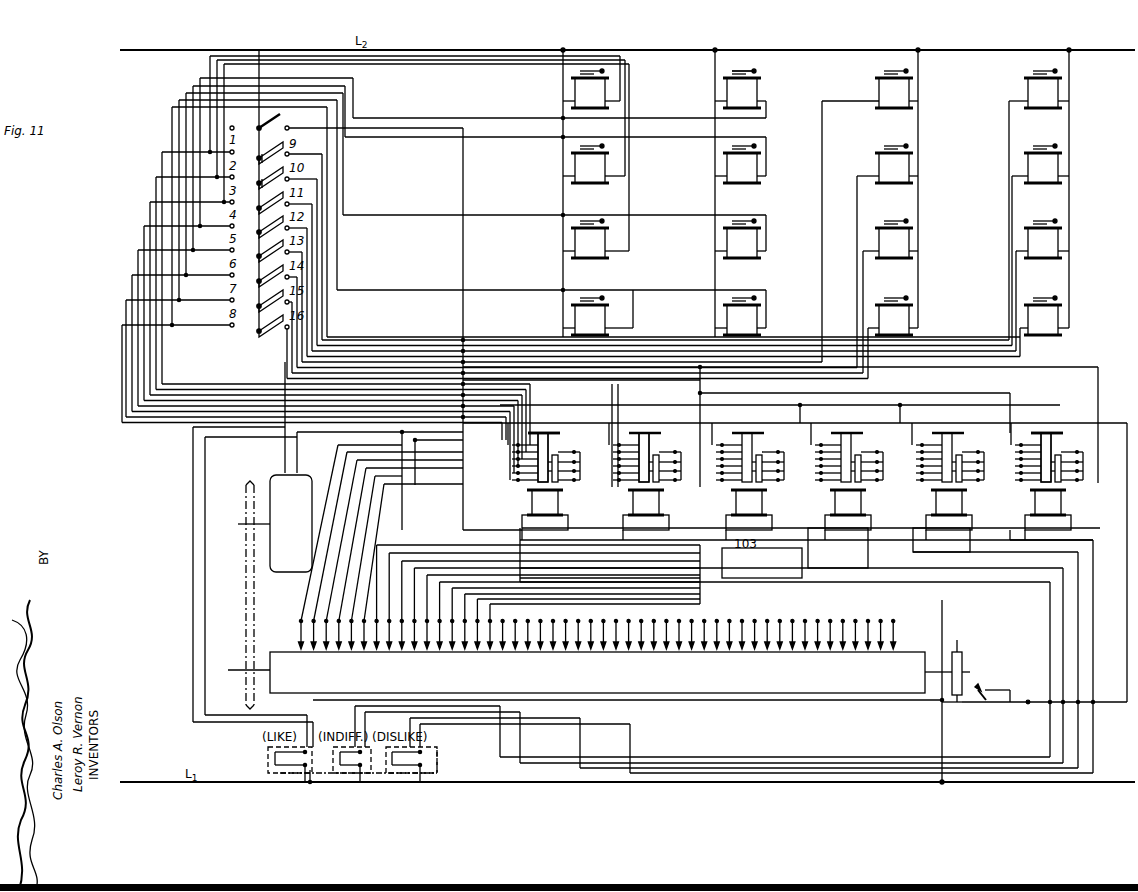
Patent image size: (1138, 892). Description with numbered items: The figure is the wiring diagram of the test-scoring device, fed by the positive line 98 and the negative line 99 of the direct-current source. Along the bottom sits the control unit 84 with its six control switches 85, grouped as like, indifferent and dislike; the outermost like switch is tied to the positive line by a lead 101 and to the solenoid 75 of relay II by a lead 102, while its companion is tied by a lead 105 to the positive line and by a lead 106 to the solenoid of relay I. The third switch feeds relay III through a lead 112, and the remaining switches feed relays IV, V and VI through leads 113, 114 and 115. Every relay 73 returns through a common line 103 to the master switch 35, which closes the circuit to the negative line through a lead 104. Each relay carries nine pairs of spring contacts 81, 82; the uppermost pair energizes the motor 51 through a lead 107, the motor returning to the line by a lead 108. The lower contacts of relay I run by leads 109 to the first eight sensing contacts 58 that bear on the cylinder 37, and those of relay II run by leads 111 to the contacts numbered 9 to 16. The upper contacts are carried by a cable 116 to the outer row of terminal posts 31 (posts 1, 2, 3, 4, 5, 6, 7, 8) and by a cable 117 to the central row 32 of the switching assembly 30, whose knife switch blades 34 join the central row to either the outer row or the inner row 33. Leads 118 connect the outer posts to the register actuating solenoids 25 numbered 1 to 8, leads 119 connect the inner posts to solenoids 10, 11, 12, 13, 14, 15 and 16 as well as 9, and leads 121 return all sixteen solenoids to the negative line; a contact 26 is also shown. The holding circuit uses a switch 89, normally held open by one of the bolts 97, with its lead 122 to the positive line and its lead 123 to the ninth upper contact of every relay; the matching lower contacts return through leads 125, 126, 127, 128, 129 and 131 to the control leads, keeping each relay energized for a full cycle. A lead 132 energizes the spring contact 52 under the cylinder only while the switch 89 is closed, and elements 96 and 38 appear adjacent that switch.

The negative line 99 is at (427, 55).
The positive line 98 is at (138, 784).
The lead 104 is at (262, 76).
The master switch 35 is at (288, 125).
The outer row of terminal posts 31 is at (217, 202).
The switching assembly 30 is at (220, 233).
The central row of terminal posts 32 is at (280, 194).
The inner row of terminal posts 33 is at (288, 225).
The knife switch blades 34 is at (288, 246).
The leads 118 is at (492, 118).
The register actuating solenoids 25 is at (600, 108).
The relay contact 26 is at (754, 71).
The line 103 is at (465, 185).
The leads 121 is at (1074, 125).
The leads 119 is at (393, 353).
The leads 117 is at (702, 380).
The leads 116 is at (484, 410).
The lower spring contacts 82 is at (518, 427).
The upper spring contacts 81 is at (546, 432).
The lead 126 is at (582, 417).
The lead 108 is at (283, 448).
The lead 107 is at (299, 448).
The motor 51 is at (268, 478).
The lead 125 is at (449, 436).
The relays 73 is at (516, 497).
The relay solenoid 75 is at (655, 525).
The lead 102 is at (192, 555).
The lead 106 is at (200, 590).
The leads 109 is at (312, 586).
The sensing contacts 58 is at (299, 636).
The leads 111 is at (700, 578).
The lead 127 is at (718, 566).
The lead 128 is at (813, 543).
The lead 129 is at (915, 543).
The lead 131 is at (1010, 541).
The lead 112 is at (503, 706).
The lead 113 is at (505, 716).
The lead 114 is at (578, 758).
The lead 115 is at (628, 760).
The cylinder 37 is at (636, 693).
The spring contact 52 is at (754, 700).
The lead 132 is at (858, 702).
The lead 122 is at (940, 728).
The bolts 97 is at (958, 640).
The resistor 96 is at (964, 644).
The conductor 38 is at (969, 667).
The switch 89 is at (980, 702).
The lead 123 is at (1126, 658).
The control switches 85 is at (259, 752).
The lead 101 is at (300, 781).
The lead 105 is at (310, 778).
The unit 84 is at (350, 778).
The terminal post / solenoid / sensing contact 1 is at (590, 88).
The terminal post / solenoid / sensing contact 2 is at (590, 163).
The terminal post / solenoid / sensing contact 3 is at (590, 238).
The terminal post / solenoid / sensing contact 4 is at (590, 315).
The terminal post / solenoid / sensing contact 5 is at (742, 88).
The terminal post / solenoid / sensing contact 6 is at (742, 163).
The terminal post / solenoid / sensing contact 7 is at (742, 238).
The terminal post / solenoid / sensing contact 8 is at (742, 315).
The terminal post / solenoid / sensing contact 9 is at (894, 88).
The terminal post / solenoid / sensing contact 10 is at (894, 163).
The terminal post / solenoid / sensing contact 11 is at (894, 238).
The terminal post / solenoid / sensing contact 12 is at (894, 315).
The terminal post / solenoid / sensing contact 13 is at (1043, 88).
The terminal post / solenoid / sensing contact 14 is at (1043, 163).
The terminal post / solenoid / sensing contact 15 is at (1043, 238).
The terminal post / solenoid / sensing contact 16 is at (1043, 315).